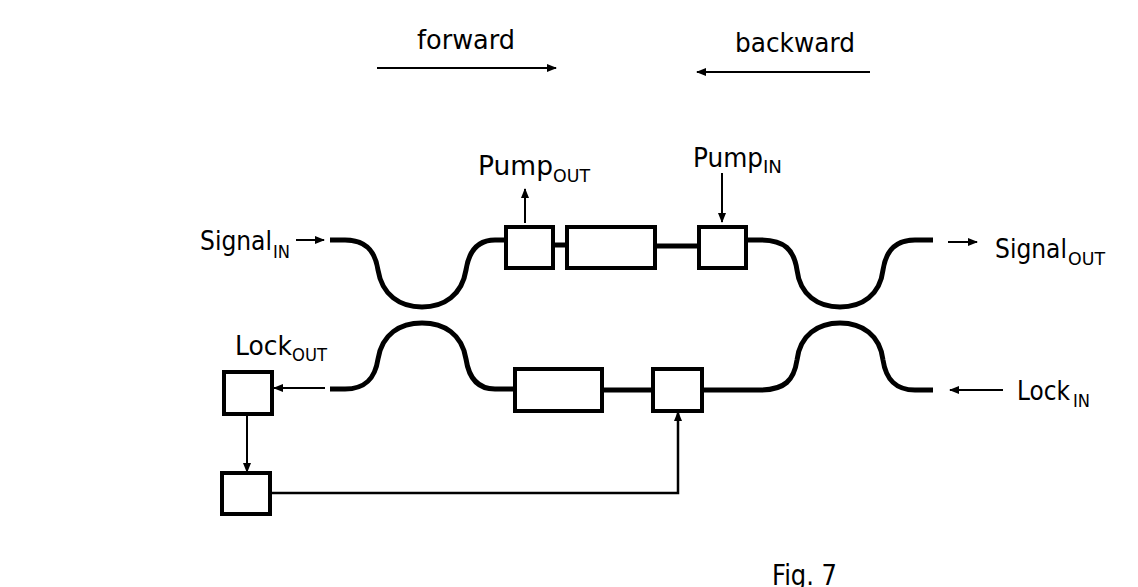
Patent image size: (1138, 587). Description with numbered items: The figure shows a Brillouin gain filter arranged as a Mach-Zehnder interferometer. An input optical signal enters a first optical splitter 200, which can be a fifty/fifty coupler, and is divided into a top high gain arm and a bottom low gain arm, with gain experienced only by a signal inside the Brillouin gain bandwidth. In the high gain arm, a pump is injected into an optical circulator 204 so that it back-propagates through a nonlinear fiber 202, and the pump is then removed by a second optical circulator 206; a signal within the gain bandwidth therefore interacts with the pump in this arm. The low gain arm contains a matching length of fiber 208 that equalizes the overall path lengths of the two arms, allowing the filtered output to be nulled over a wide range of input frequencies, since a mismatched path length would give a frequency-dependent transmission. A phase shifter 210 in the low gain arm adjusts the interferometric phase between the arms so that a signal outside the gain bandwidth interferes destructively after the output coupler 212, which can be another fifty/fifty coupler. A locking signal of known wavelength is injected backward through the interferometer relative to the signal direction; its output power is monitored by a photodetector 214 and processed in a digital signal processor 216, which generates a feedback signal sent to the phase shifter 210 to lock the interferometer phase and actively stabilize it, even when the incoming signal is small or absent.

The first optical splitter 200 is at (422, 314).
The nonlinear fiber 202 is at (611, 234).
The optical circulator 204 is at (743, 234).
The second optical circulator 206 is at (507, 236).
The matching length of fiber 208 is at (558, 378).
The phase shifter 210 is at (677, 373).
The output coupler 212 is at (817, 315).
The photodetector 214 is at (219, 393).
The digital signal processor 216 is at (218, 493).